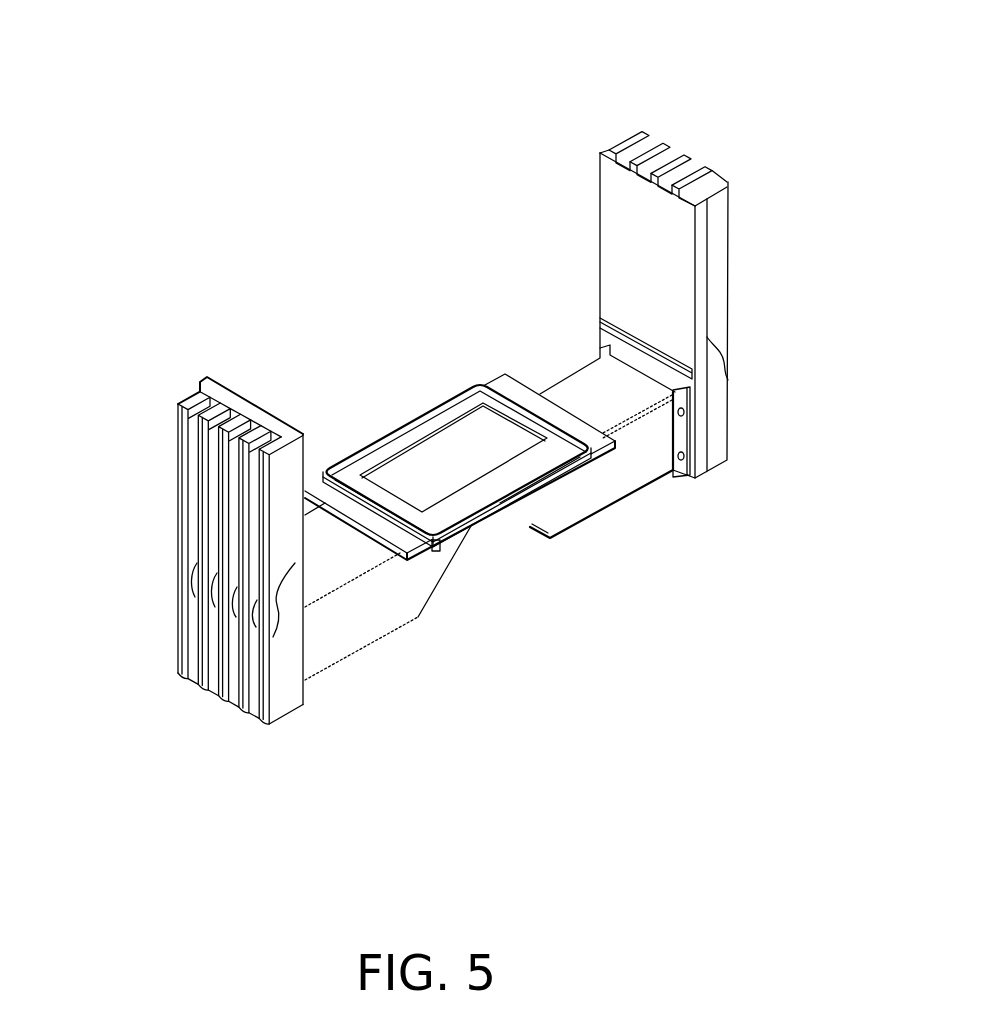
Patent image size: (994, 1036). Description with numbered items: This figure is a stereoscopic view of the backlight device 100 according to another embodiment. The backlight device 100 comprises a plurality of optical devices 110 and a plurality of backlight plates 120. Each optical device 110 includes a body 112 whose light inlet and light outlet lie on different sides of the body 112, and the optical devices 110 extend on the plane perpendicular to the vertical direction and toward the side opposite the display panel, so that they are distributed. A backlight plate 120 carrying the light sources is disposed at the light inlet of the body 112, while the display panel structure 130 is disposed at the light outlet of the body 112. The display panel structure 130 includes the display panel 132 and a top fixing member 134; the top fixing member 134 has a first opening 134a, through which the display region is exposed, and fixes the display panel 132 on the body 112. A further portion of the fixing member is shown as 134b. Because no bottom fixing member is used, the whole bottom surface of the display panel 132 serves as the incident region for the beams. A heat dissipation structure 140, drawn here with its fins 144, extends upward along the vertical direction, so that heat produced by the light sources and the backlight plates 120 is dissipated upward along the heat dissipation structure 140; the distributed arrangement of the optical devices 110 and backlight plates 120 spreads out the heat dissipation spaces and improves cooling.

The backlight device 100 is at (766, 40).
The optical device 110 is at (640, 540).
The body 112 is at (565, 508).
The backlight plate 120 is at (675, 375).
The display panel structure 130 is at (355, 402).
The display panel 132 is at (475, 438).
The top fixing member 134 is at (515, 412).
The first opening 134a is at (413, 440).
The frame side flange 134b is at (562, 422).
The heat dissipation structure 140 is at (548, 152).
The heat dissipation fins 144 is at (218, 488).